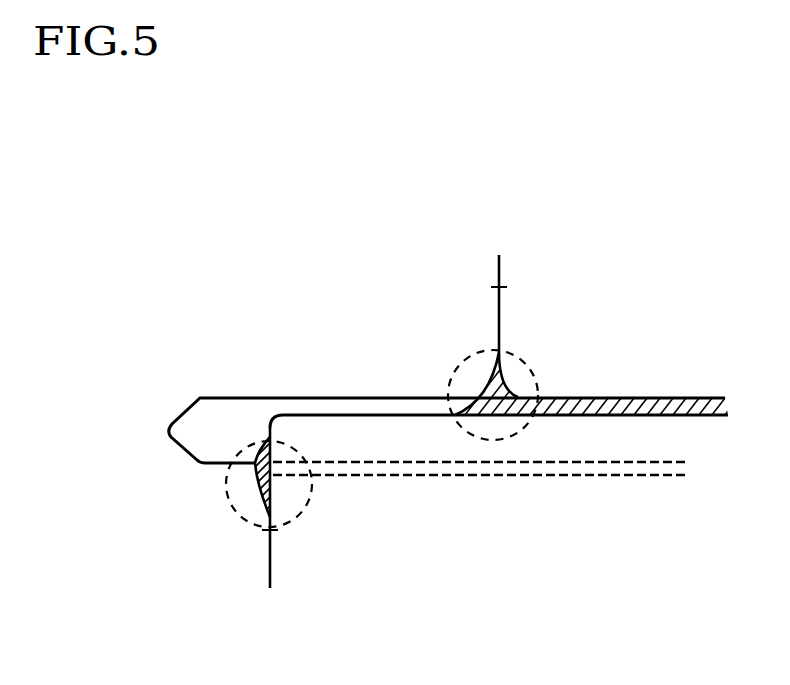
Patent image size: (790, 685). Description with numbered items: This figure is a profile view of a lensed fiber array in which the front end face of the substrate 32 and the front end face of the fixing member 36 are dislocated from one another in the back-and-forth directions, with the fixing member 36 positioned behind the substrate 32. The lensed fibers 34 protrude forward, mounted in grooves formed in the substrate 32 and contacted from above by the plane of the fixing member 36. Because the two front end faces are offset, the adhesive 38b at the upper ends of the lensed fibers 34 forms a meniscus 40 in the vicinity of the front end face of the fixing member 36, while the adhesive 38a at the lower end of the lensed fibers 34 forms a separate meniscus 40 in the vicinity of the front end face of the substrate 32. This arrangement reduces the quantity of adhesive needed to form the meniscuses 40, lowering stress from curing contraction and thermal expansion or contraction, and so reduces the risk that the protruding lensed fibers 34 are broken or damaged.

The substrate 32 is at (282, 558).
The lensed fibers 34 is at (212, 410).
The fixing member 36 is at (499, 287).
The adhesive 38a is at (412, 465).
The adhesive 38b is at (670, 397).
The meniscus 40 is at (536, 356).